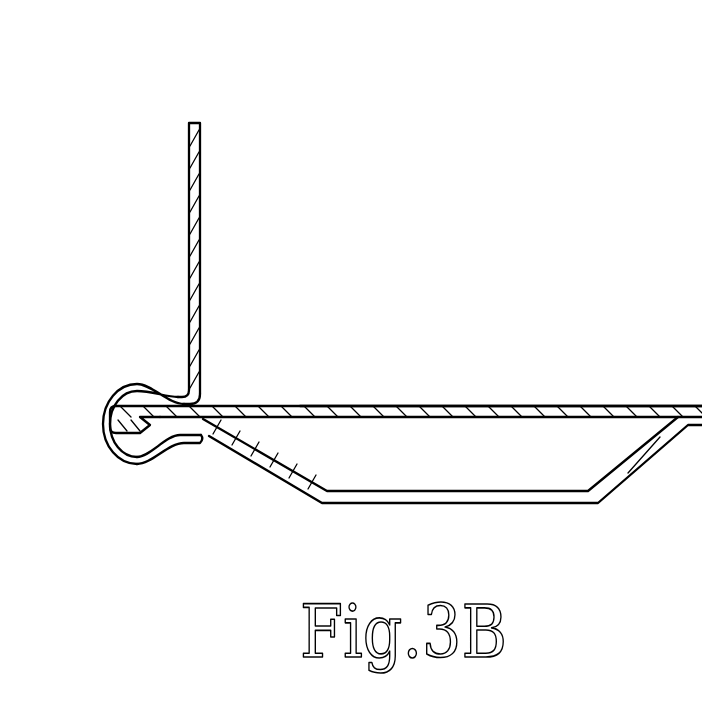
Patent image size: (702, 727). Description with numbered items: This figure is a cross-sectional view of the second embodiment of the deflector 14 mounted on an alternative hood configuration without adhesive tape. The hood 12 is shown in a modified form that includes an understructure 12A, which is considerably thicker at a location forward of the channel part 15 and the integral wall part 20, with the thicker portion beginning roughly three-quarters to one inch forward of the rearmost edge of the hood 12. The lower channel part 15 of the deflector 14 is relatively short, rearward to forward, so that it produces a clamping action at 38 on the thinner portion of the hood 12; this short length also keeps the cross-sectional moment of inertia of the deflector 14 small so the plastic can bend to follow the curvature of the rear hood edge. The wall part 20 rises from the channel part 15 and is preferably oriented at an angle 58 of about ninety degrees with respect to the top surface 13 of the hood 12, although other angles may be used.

The hood 12 is at (308, 408).
The understructure 12A is at (305, 502).
The top surface 13 is at (525, 406).
The deflector 14 is at (209, 208).
The channel part 15 is at (137, 384).
The wall part 20 is at (190, 200).
The clamping action location 38 is at (193, 447).
The angle 58 is at (278, 408).